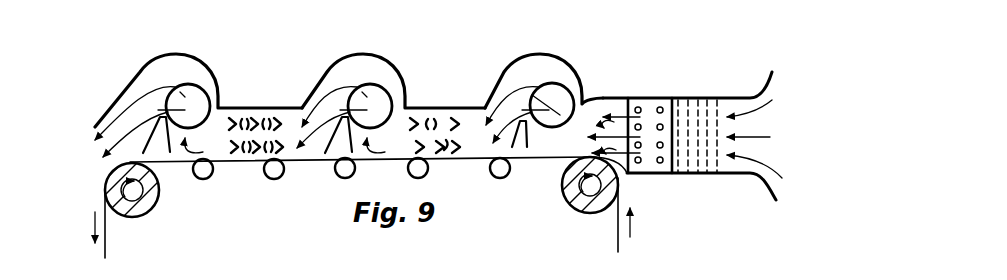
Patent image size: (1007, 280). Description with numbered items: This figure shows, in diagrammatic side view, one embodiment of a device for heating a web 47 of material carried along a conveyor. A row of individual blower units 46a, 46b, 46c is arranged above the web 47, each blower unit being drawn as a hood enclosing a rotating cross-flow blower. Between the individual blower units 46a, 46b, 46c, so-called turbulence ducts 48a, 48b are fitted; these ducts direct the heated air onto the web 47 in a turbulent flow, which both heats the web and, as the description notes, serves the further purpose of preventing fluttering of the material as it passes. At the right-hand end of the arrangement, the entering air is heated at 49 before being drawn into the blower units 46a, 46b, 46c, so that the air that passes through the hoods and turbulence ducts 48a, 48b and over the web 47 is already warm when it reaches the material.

The blower unit 46a is at (567, 62).
The blower unit 46b is at (377, 55).
The blower unit 46c is at (170, 52).
The web 47 is at (618, 250).
The turbulence duct 48a is at (262, 105).
The turbulence duct 48b is at (450, 105).
The air heating location 49 is at (691, 100).